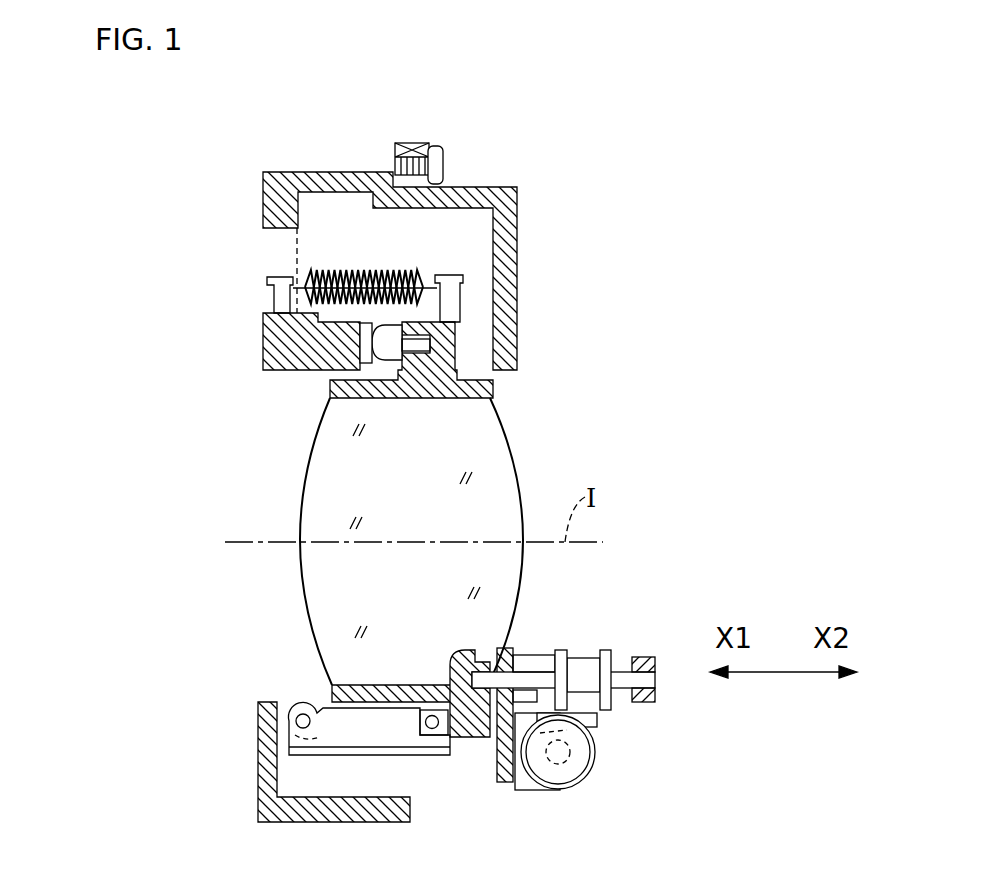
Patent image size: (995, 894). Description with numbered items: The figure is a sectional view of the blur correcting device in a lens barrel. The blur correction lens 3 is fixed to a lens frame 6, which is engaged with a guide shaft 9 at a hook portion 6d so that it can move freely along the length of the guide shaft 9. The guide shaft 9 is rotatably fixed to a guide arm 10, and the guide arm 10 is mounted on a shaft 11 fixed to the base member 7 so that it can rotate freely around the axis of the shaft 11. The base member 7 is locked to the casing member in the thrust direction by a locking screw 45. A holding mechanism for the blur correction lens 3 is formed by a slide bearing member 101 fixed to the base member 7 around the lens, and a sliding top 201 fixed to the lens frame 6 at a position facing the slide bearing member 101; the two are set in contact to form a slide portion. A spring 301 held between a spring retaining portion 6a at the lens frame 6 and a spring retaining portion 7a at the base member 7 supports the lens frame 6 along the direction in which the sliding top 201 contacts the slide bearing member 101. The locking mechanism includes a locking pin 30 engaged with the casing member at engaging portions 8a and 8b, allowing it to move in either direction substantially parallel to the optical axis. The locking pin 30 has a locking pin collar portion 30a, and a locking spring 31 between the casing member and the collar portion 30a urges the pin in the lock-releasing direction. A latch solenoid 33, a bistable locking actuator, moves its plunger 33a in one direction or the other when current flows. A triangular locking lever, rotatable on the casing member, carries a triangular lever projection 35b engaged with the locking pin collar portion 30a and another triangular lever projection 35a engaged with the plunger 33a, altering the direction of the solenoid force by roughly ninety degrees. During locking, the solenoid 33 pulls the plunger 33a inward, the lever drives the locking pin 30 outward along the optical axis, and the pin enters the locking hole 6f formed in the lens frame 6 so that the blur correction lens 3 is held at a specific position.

The blur correction lens 3 is at (315, 503).
The lens frame 6 is at (355, 398).
The spring retaining portion 6a is at (450, 300).
The hook portion 6d is at (447, 745).
The locking hole 6f is at (478, 737).
The base member 7 is at (290, 343).
The spring retaining portion 7a is at (278, 300).
The engaging portion 8a is at (636, 668).
The engaging portion 8b is at (495, 745).
The guide shaft 9 is at (322, 818).
The guide arm 10 is at (333, 735).
The shaft 11 is at (300, 715).
The locking pin 30 is at (625, 673).
The locking pin collar portion 30a is at (558, 662).
The locking spring 31 is at (527, 668).
The latch solenoid 33 is at (530, 788).
The plunger 33a is at (590, 763).
The triangular lever projection 35a is at (577, 762).
The triangular lever projection 35b is at (597, 722).
The locking screw 45 is at (443, 163).
The slide bearing member 101 is at (362, 352).
The sliding top 201 is at (453, 347).
The spring 301 is at (400, 273).